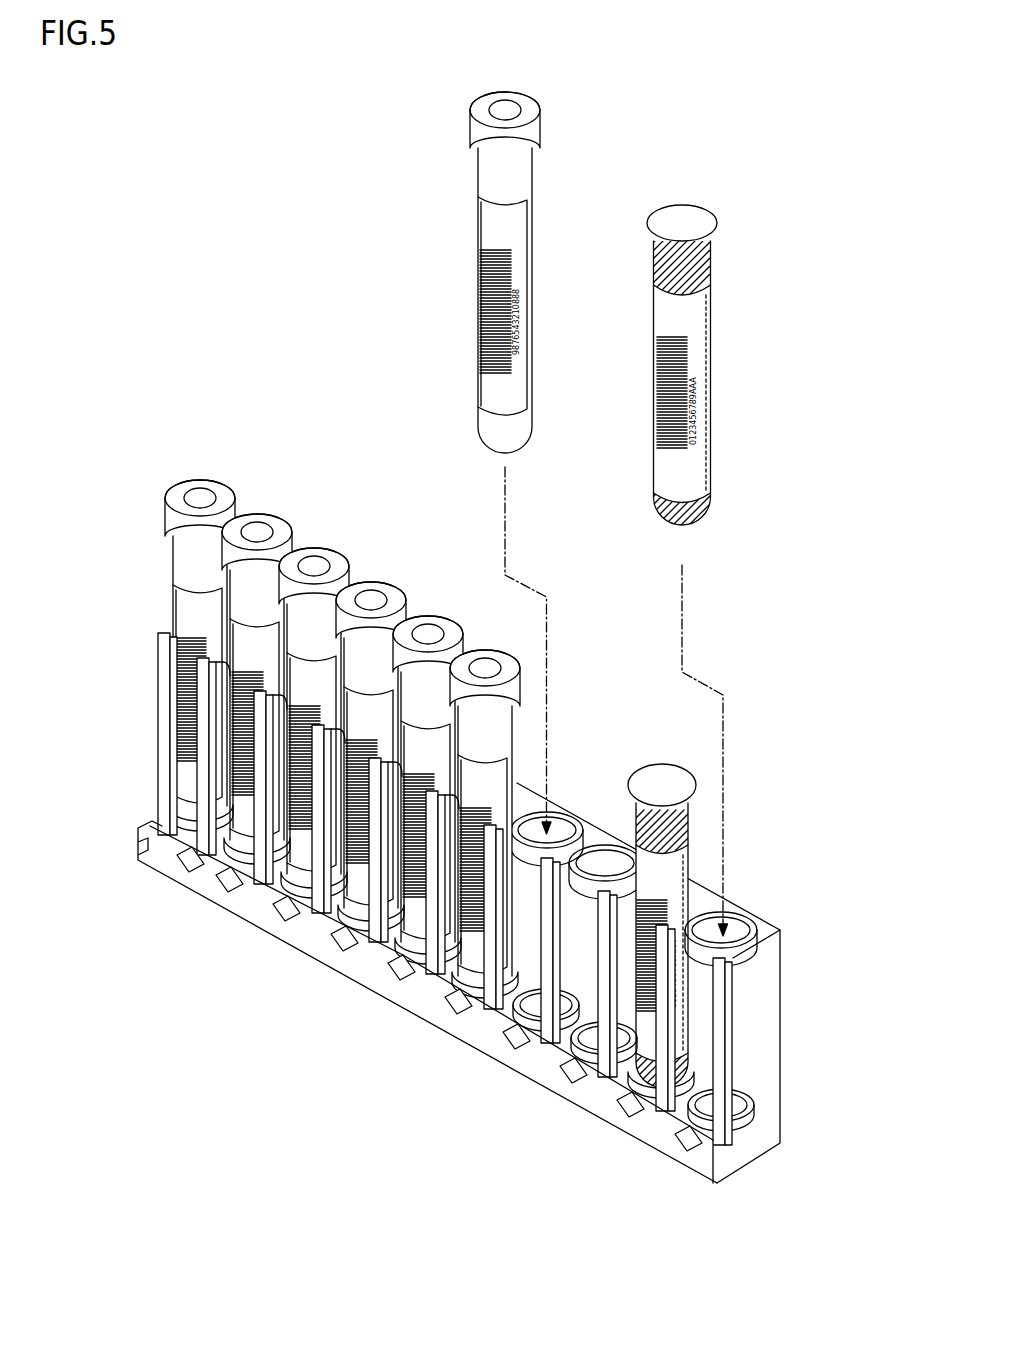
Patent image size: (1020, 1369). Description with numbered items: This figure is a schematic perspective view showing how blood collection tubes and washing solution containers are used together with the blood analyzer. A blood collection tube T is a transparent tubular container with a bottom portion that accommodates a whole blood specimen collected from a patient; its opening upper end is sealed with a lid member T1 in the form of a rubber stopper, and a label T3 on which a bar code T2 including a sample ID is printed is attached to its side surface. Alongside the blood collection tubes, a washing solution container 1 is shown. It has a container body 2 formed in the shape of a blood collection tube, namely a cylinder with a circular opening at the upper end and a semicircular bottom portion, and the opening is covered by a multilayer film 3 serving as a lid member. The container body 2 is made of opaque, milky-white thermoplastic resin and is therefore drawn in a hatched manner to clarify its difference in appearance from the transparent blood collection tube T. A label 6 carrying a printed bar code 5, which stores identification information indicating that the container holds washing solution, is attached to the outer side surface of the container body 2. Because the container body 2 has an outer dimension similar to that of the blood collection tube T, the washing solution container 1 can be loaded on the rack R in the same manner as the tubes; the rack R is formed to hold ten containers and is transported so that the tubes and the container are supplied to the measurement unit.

The blood collection tube T is at (560, 104).
The lid member T1 is at (488, 137).
The bar code T2 is at (522, 268).
The label T3 is at (522, 212).
The washing solution container 1 is at (735, 204).
The container body 2 is at (710, 283).
The multilayer film 3 is at (685, 226).
The bar code 5 is at (698, 358).
The label 6 is at (698, 322).
The rack R is at (753, 1050).